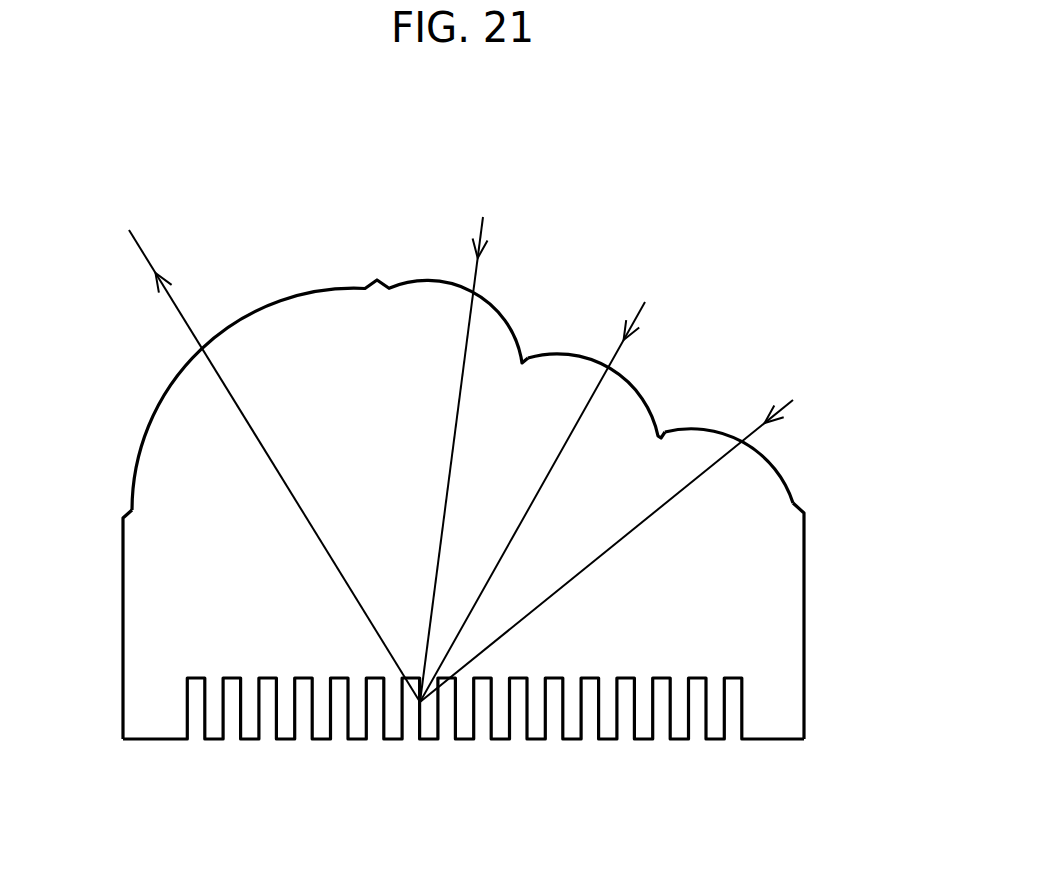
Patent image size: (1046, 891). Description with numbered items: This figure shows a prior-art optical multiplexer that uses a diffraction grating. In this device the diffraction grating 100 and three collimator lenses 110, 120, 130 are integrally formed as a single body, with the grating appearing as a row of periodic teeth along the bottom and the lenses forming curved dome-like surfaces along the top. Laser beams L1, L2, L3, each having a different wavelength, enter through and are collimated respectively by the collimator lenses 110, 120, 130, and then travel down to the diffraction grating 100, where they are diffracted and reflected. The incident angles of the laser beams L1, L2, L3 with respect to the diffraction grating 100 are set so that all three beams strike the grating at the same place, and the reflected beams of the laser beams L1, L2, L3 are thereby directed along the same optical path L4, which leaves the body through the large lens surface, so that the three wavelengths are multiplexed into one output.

The diffraction grating 100 is at (742, 748).
The collimator lens 110 is at (505, 315).
The collimator lens 120 is at (647, 393).
The collimator lens 130 is at (778, 465).
The laser beam L1 is at (456, 442).
The laser beam L2 is at (538, 485).
The laser beam L3 is at (624, 539).
The optical path L4 is at (266, 449).